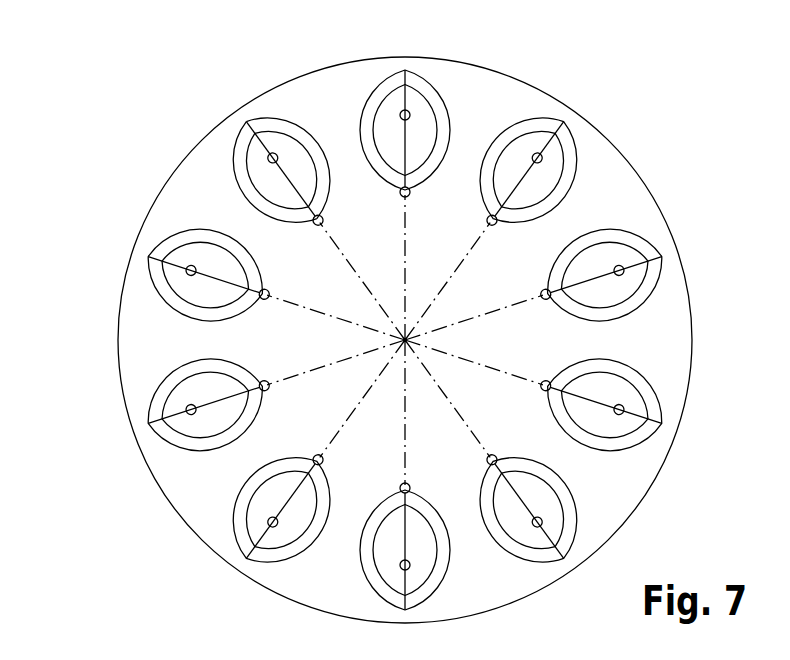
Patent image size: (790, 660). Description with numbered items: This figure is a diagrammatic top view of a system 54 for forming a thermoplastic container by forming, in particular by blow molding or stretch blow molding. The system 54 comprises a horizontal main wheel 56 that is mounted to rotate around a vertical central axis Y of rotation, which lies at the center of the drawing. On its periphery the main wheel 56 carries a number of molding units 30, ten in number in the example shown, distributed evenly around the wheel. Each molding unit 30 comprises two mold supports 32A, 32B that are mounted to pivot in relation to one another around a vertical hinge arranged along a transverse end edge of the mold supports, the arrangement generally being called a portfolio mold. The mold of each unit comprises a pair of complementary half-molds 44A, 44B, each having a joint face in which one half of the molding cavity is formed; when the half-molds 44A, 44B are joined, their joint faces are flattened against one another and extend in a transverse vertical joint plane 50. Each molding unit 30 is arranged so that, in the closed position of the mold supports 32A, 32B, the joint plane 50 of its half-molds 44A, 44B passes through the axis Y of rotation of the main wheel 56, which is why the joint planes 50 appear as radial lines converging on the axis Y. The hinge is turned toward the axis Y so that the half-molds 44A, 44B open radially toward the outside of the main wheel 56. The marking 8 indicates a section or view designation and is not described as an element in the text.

The system for forming a thermoplastic container 54 is at (357, 324).
The main wheel 56 is at (135, 326).
The molding unit 30 is at (390, 317).
The mold support 32A is at (253, 197).
The mold support 32B is at (306, 142).
The half-mold 44A is at (257, 160).
The half-mold 44B is at (277, 146).
The joint plane 50 is at (353, 268).
The axis of rotation Y is at (408, 345).
The section line 8 is at (222, 97).